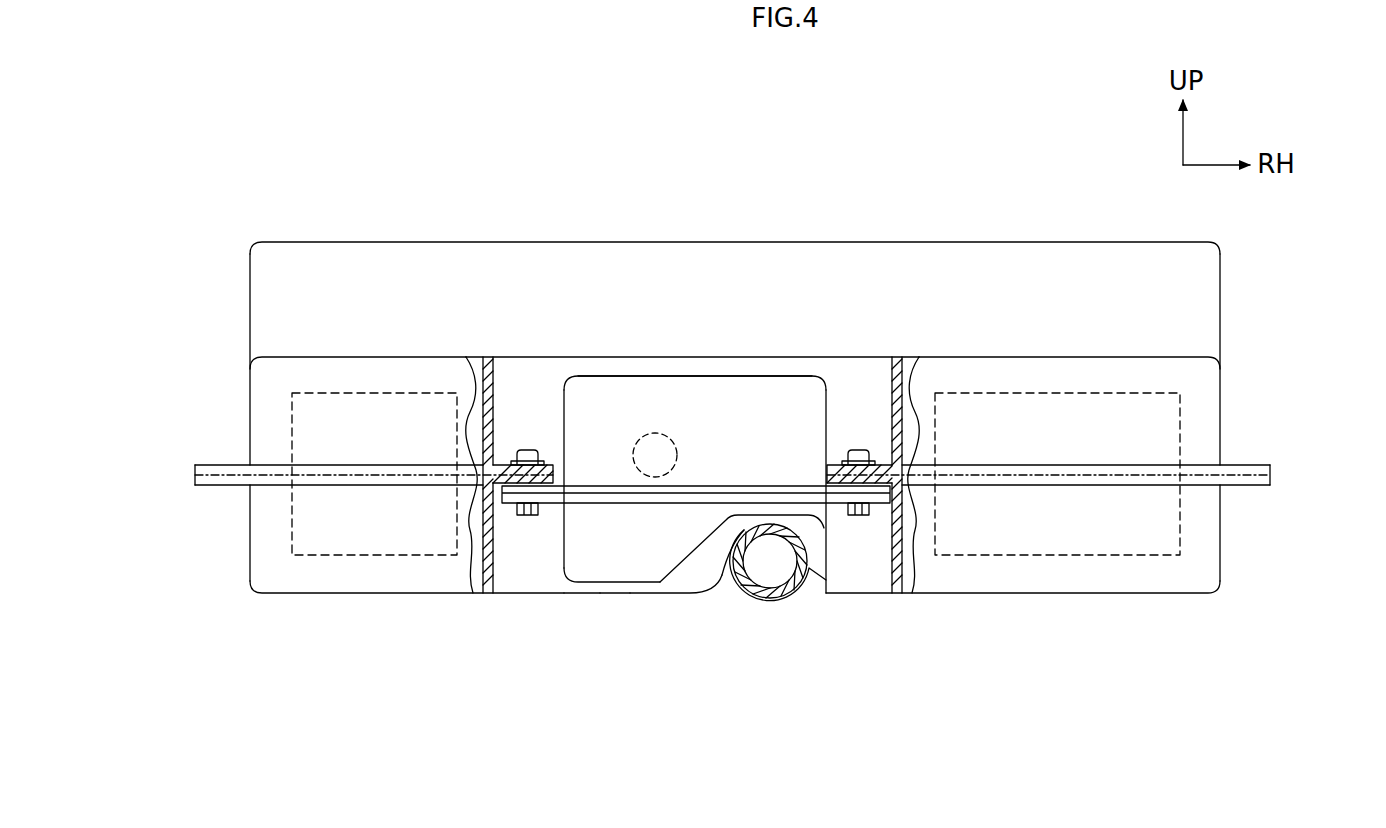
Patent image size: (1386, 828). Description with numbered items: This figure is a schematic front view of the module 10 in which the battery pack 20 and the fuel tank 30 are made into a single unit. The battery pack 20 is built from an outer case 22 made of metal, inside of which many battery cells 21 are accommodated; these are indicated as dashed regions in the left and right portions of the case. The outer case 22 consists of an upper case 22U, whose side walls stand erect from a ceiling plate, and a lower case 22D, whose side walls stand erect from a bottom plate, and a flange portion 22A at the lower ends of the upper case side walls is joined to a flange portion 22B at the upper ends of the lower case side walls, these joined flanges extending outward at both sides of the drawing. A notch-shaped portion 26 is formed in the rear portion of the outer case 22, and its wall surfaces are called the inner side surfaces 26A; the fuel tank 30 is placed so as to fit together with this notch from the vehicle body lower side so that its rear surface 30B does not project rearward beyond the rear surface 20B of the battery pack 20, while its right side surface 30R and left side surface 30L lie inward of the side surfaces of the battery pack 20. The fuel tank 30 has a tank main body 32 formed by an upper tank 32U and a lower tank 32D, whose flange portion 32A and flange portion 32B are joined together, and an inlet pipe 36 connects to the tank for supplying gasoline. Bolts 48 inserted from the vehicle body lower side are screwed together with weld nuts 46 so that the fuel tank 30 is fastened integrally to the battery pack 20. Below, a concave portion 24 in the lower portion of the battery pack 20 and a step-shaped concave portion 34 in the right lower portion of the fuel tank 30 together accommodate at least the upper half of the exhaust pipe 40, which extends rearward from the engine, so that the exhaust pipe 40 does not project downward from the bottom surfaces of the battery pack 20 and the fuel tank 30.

The vehicle body structure 10 is at (447, 635).
The battery pack 20 is at (246, 386).
The rear surface 20B is at (321, 375).
The battery cell 21 is at (325, 556).
The outer case 22 is at (386, 352).
The upper case 22U is at (1222, 400).
The lower case 22D is at (1222, 560).
The flange portion 22A is at (195, 463).
The flange portion 22B is at (195, 487).
The concave portion 24 is at (732, 596).
The notch-shaped portion 26 is at (886, 578).
The inner side surface 26A is at (496, 545).
The fuel tank 30 is at (726, 370).
The left side surface 30L is at (560, 395).
The right side surface 30R is at (832, 405).
The rear surface 30B is at (656, 410).
The tank main body 32 is at (776, 408).
The upper tank 32U is at (640, 378).
The flange portion 32A is at (738, 482).
The flange portion 32B is at (598, 594).
The lower tank 32D is at (638, 594).
The concave portion 34 is at (815, 586).
The inlet pipe 36 is at (641, 438).
The exhaust pipe 40 is at (788, 600).
The weld nut 46 is at (522, 450).
The bolt 48 is at (527, 516).